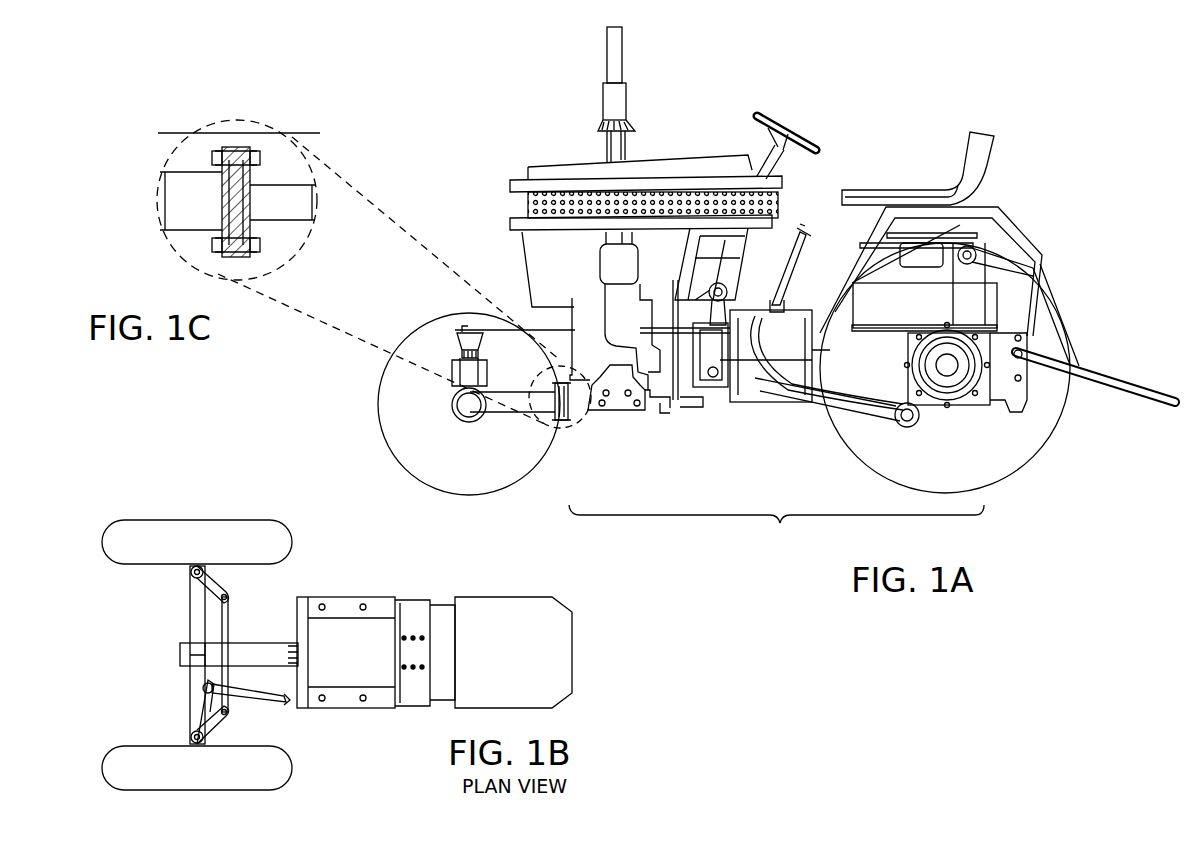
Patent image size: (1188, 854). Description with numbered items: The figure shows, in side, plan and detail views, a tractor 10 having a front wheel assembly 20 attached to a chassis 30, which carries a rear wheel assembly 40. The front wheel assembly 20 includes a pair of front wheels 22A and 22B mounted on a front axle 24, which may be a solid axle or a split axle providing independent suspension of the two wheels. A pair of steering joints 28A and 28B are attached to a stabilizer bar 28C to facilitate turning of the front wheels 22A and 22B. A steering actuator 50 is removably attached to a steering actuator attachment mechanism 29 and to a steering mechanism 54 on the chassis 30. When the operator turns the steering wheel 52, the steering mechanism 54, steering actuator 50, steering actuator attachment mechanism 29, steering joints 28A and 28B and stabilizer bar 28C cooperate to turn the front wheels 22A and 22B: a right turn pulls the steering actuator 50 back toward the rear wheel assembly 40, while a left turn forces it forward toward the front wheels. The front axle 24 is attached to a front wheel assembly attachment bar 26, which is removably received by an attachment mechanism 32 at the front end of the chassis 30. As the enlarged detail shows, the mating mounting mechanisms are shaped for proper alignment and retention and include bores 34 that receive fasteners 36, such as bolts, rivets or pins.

In FIG. 1A, the tractor 10 is at (874, 129).
In FIG. 1A, the front wheel assembly 20 is at (380, 460).
In FIG. 1B, the front wheel assembly 20 is at (137, 634).
In FIG. 1B, the front wheel 22A is at (268, 527).
In FIG. 1B, the front wheel 22B is at (272, 776).
In FIG. 1B, the front axle 24 is at (190, 600).
In FIG. 1B, the front wheel assembly attachment bar 26 is at (250, 648).
In FIG. 1B, the steering joint 28A is at (220, 584).
In FIG. 1B, the steering joint 28B is at (220, 724).
In FIG. 1B, the stabilizer bar 28C is at (227, 622).
In FIG. 1B, the steering actuator attachment mechanism 29 is at (190, 705).
In FIG. 1A, the chassis 30 is at (776, 528).
In FIG. 1B, the chassis 30 is at (348, 709).
In FIG. 1A, the attachment mechanism 32 is at (578, 422).
In FIG. 1C, the attachment mechanism 32 is at (286, 222).
In FIG. 1C, the bores 34 is at (240, 148).
In FIG. 1C, the fasteners 36 is at (210, 158).
In FIG. 1A, the rear wheel assembly 40 is at (828, 451).
In FIG. 1B, the steering actuator 50 is at (247, 698).
In FIG. 1A, the steering wheel 52 is at (798, 110).
In FIG. 1A, the steering mechanism 54 is at (710, 268).